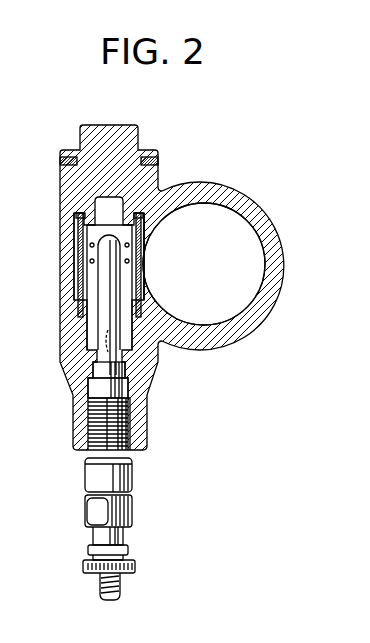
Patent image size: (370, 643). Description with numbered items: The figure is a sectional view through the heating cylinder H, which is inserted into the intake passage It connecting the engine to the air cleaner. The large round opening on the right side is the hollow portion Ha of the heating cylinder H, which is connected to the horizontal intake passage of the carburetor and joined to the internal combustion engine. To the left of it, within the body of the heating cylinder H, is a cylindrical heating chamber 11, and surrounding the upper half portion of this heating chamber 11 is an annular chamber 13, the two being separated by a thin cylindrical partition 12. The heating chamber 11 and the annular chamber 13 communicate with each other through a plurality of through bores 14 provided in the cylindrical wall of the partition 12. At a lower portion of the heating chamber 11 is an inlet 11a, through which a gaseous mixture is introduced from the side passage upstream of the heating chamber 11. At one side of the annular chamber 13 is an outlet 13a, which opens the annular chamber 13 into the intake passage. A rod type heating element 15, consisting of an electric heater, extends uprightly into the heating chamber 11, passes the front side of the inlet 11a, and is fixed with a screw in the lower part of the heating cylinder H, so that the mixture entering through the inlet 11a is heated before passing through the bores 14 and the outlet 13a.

The heating chamber 11 is at (137, 304).
The inlet 11a is at (133, 346).
The cylindrical partition 12 is at (80, 277).
The annular chamber 13 is at (76, 219).
The outlet 13a is at (143, 266).
The through bores 14 is at (80, 262).
The rod type heating element 15 is at (103, 323).
The heating cylinder H is at (284, 266).
The hollow portion Ha is at (228, 259).
The intake passage It is at (217, 224).